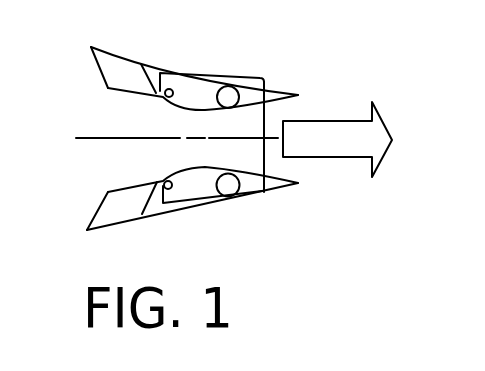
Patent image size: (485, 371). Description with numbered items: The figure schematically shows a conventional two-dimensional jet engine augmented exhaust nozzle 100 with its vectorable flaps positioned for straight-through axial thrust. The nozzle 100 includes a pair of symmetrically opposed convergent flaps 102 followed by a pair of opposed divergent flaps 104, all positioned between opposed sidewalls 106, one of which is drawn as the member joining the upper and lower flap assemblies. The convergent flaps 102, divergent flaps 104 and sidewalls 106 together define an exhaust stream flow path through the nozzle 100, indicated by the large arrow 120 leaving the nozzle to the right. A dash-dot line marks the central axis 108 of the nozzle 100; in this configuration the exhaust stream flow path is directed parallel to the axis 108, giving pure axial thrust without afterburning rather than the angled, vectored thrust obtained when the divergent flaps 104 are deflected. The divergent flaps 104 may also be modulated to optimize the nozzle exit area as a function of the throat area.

The exhaust nozzle 100 is at (228, 75).
The convergent flaps 102 is at (205, 88).
The divergent flaps 104 is at (276, 94).
The sidewalls 106 is at (258, 194).
The central axis 108 is at (104, 136).
The arrow 120 is at (375, 133).